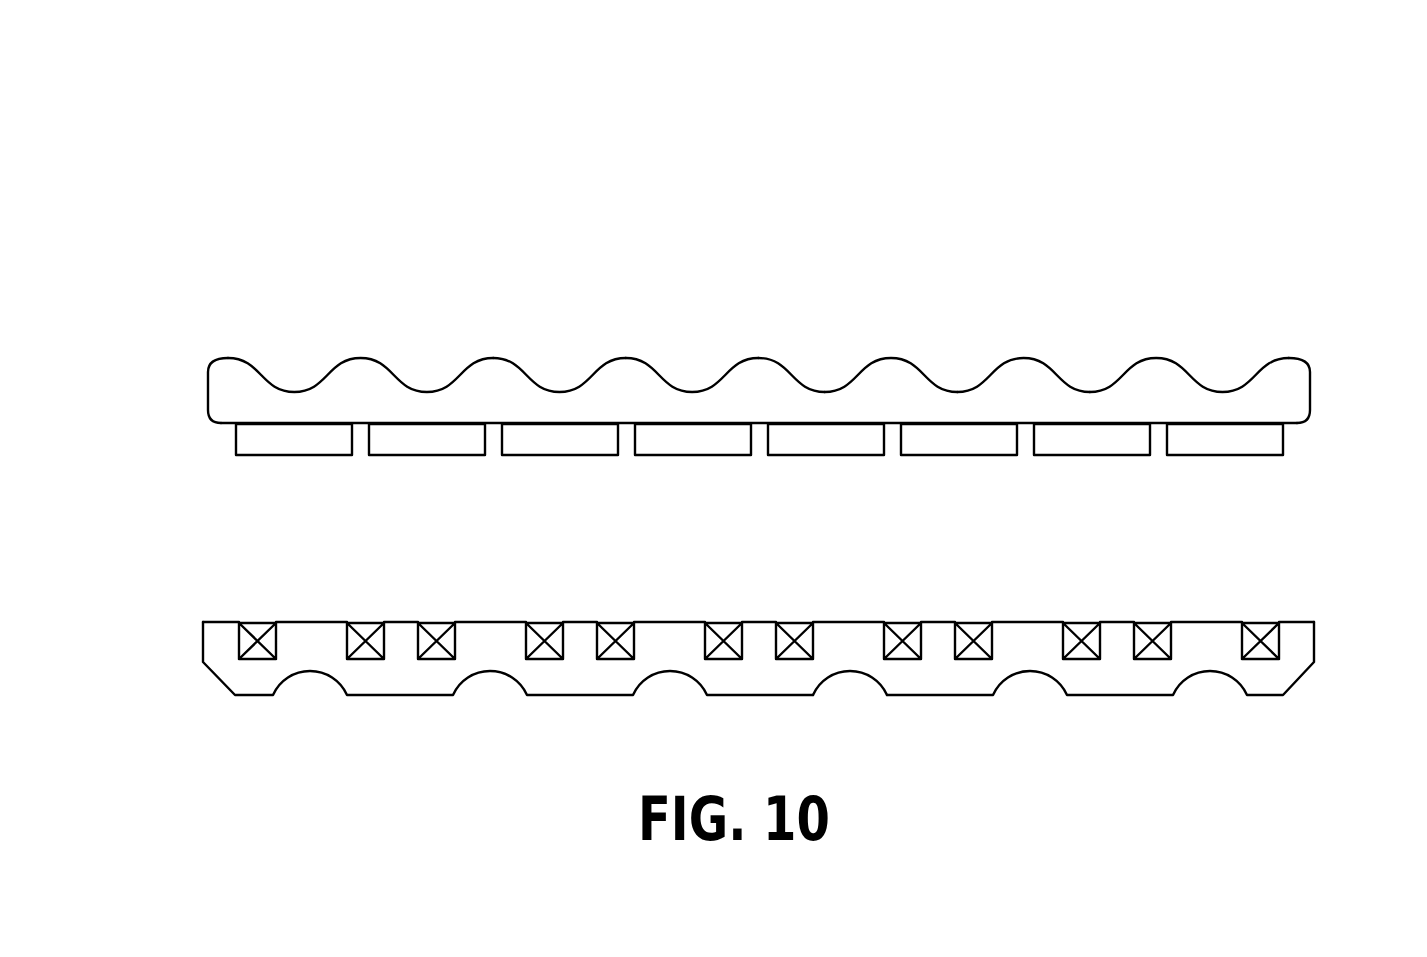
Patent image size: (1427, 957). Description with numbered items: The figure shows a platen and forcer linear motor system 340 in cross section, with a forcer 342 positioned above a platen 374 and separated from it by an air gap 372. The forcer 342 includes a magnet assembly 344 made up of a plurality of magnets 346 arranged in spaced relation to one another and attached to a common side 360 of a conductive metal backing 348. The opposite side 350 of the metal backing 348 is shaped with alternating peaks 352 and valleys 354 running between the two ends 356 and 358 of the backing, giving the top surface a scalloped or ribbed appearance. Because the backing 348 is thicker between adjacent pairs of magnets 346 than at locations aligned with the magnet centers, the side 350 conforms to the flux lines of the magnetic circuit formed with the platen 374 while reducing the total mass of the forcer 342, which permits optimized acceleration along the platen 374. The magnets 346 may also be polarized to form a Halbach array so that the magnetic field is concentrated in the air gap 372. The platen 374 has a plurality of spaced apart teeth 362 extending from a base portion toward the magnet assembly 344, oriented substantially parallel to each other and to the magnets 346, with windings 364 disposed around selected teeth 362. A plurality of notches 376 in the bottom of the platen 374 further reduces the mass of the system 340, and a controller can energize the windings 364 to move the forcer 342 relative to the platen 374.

The platen and forcer linear motor system 340 is at (1030, 109).
The forcer 342 is at (605, 208).
The magnet assembly 344 is at (795, 296).
The magnets 346 is at (442, 456).
The conductive metal backing 348 is at (560, 326).
The side of metal backing 350 is at (1036, 351).
The peaks 352 is at (636, 357).
The valleys 354 is at (955, 389).
The end of metal backing 356 is at (211, 357).
The end of metal backing 358 is at (1299, 359).
The side of metal backing 360 is at (1298, 436).
The teeth 362 is at (311, 622).
The windings 364 is at (975, 622).
The air gap 372 is at (191, 563).
The platen 374 is at (1121, 696).
The notches 376 is at (848, 690).